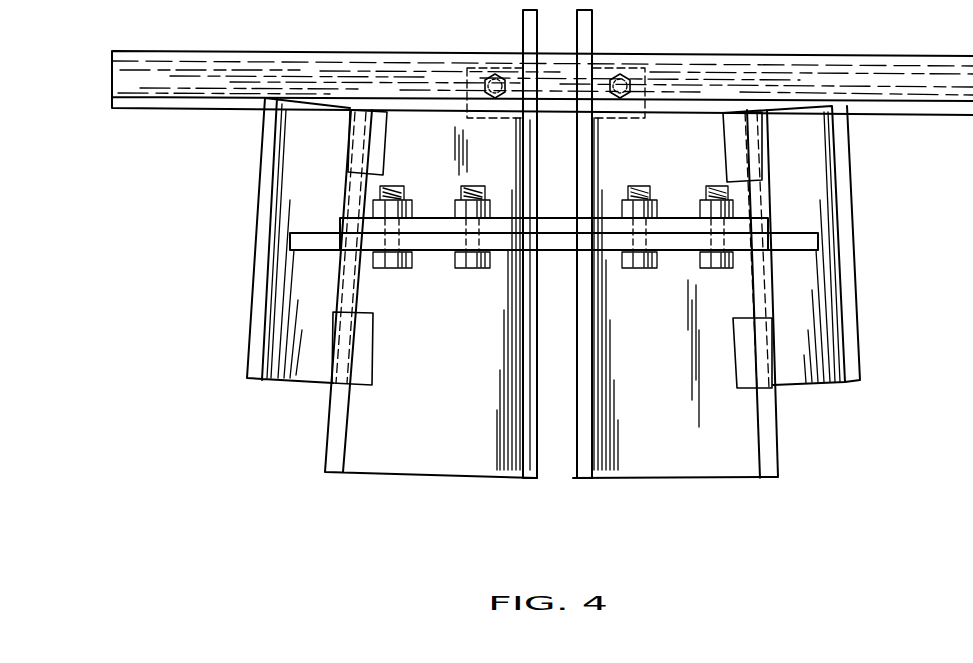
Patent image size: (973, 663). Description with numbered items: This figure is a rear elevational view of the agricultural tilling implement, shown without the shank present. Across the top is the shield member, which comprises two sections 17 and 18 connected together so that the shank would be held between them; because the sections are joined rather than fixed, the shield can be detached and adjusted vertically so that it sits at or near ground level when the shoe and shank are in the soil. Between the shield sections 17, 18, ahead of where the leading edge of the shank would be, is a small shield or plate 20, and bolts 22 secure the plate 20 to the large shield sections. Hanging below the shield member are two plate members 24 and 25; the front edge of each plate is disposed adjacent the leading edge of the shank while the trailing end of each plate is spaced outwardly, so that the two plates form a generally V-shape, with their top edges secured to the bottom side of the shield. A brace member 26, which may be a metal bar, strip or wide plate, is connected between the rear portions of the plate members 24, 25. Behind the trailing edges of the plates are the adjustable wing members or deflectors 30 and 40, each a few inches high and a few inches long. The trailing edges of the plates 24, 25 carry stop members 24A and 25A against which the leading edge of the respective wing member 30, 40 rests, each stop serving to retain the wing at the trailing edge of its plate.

The shield section 17 is at (928, 66).
The shield section 18 is at (197, 52).
The small shield or plate 20 is at (560, 63).
The bolts 22 is at (487, 84).
The plate member 24 is at (480, 462).
The stop member 24A is at (378, 112).
The plate member 25 is at (668, 465).
The stop member 25A is at (748, 112).
The brace member 26 is at (556, 251).
The wing member 30 is at (246, 322).
The wing member 40 is at (862, 327).